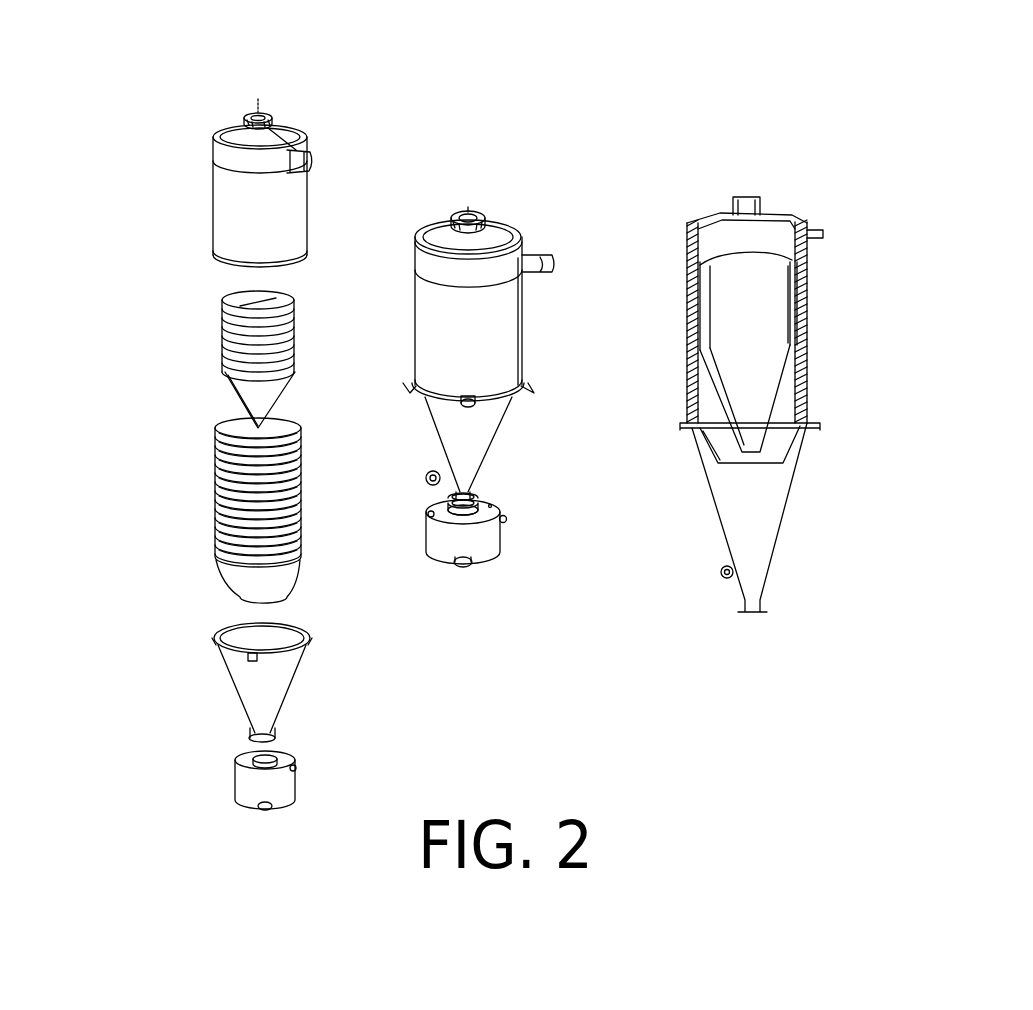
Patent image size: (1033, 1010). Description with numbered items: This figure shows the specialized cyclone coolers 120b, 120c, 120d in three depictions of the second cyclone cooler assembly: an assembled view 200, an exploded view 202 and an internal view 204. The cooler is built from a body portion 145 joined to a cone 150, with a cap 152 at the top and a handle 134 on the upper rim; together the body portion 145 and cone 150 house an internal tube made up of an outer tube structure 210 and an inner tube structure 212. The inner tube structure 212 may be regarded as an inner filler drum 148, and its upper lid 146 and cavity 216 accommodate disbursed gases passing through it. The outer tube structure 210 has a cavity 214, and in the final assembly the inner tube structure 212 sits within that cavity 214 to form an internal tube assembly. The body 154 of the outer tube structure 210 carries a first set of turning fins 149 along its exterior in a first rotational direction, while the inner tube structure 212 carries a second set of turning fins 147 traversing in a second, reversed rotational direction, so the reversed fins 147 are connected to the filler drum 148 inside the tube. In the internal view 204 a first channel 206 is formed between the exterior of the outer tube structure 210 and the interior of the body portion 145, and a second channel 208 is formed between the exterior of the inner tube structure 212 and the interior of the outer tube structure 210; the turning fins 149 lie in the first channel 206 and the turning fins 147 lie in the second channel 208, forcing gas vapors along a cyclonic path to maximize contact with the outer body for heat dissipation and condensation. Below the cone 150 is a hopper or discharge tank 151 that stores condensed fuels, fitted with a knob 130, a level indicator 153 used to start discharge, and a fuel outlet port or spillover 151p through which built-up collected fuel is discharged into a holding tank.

The exploded view 202 is at (206, 93).
The assembled view 200 is at (508, 84).
The internal view 204 is at (817, 549).
The cap 152 is at (258, 112).
The body portion 145 is at (246, 200).
The handle 134 is at (318, 156).
The lid 146 is at (236, 302).
The cavity 216 is at (281, 300).
The second set of turning fins 147 is at (228, 330).
The inner tube structure 212 is at (276, 379).
The inner filler drum 148 is at (245, 386).
The cavity 214 is at (240, 432).
The first set of turning fins 149 is at (215, 462).
The outer tube structure 210 is at (232, 560).
The body of outer tube structure 154 is at (283, 556).
The cone 150 is at (280, 668).
The fuel outlet port 151p is at (237, 764).
The discharge tank 151 is at (288, 785).
The knob 130 is at (508, 520).
The level indicator 153 is at (433, 472).
The second cyclone cooler 120b is at (496, 322).
The third cyclone cooler 120c is at (497, 338).
The fourth cyclone cooler 120d is at (500, 363).
The first channel 206 is at (807, 310).
The second channel 208 is at (795, 323).